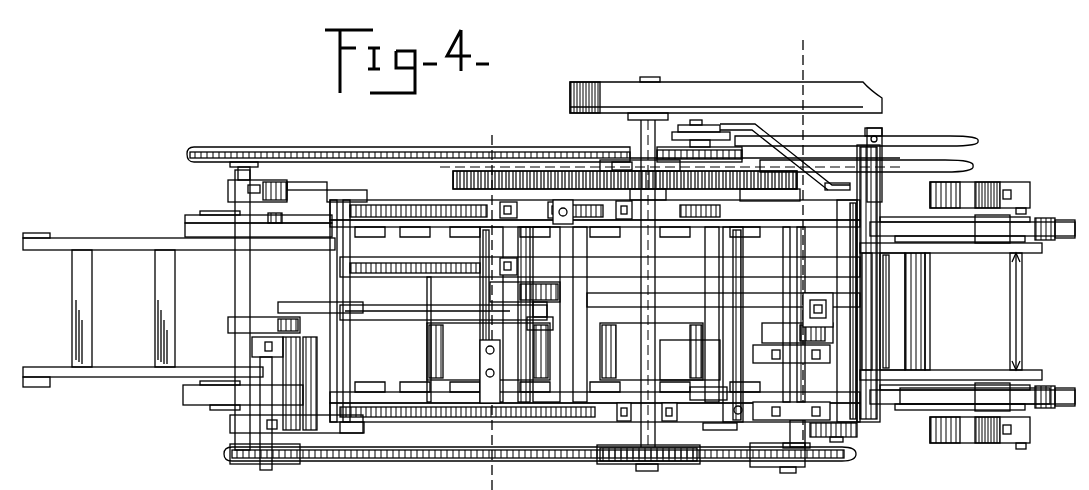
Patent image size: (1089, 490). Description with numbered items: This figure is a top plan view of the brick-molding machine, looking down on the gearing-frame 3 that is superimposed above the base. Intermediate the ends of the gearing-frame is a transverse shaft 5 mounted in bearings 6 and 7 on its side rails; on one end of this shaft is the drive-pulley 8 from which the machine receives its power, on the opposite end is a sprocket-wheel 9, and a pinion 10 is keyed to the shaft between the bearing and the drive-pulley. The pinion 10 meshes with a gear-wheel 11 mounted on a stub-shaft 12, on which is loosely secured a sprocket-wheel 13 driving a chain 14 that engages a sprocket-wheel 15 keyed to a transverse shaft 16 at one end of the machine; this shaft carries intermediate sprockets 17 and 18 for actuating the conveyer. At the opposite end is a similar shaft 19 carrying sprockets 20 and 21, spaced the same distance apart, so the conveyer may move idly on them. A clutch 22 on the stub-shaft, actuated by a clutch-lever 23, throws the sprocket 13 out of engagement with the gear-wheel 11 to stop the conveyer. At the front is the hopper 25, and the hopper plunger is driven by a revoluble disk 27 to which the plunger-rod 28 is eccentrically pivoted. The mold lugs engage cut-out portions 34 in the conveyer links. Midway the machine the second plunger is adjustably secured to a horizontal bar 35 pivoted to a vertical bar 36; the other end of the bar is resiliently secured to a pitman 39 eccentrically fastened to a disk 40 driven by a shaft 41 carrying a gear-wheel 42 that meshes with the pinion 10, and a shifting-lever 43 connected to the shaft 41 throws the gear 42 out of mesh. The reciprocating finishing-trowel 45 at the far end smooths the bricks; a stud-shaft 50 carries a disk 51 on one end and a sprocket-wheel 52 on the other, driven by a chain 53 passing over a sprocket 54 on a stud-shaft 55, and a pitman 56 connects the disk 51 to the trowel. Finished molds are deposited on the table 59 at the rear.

The gearing-frame 3 is at (405, 205).
The transverse shaft 5 is at (392, 126).
The bearing 6 is at (846, 52).
The bearing 7 is at (628, 418).
The drive-pulley 8 is at (607, 82).
The sprocket-wheel 9 is at (672, 463).
The pinion 10 is at (628, 170).
The gear-wheel 11 is at (772, 192).
The stub-shaft 12 is at (690, 123).
The sprocket-wheel 13 is at (722, 150).
The chain 14 is at (480, 152).
The sprocket-wheel 15 is at (278, 150).
The transverse shaft 16 is at (240, 300).
The intermediate sprocket 17 is at (208, 408).
The intermediate sprocket 18 is at (213, 222).
The shaft 19 is at (1012, 313).
The sprocket 20 is at (1045, 390).
The sprocket 21 is at (1053, 243).
The clutch 22 is at (707, 132).
The clutch-lever 23 is at (905, 134).
The hopper 25 is at (920, 278).
The revoluble disk 27 is at (842, 336).
The plunger-rod 28 is at (835, 320).
The cut-out portions 34 is at (978, 362).
The horizontal bar 35 is at (723, 307).
The vertical bar 36 is at (662, 320).
The pitman 39 is at (543, 328).
The disk 40 is at (490, 290).
The shaft 41 is at (500, 255).
The gear-wheel 42 is at (456, 185).
The shifting-lever 43 is at (910, 163).
The reciprocating finishing-trowel 45 is at (488, 363).
The stud-shaft 50 is at (262, 362).
The disk 51 is at (232, 325).
The sprocket-wheel 52 is at (244, 462).
The chain 53 is at (410, 461).
The sprocket 54 is at (770, 468).
The stud-shaft 55 is at (790, 436).
The pitman 56 is at (386, 300).
The table 59 is at (179, 310).